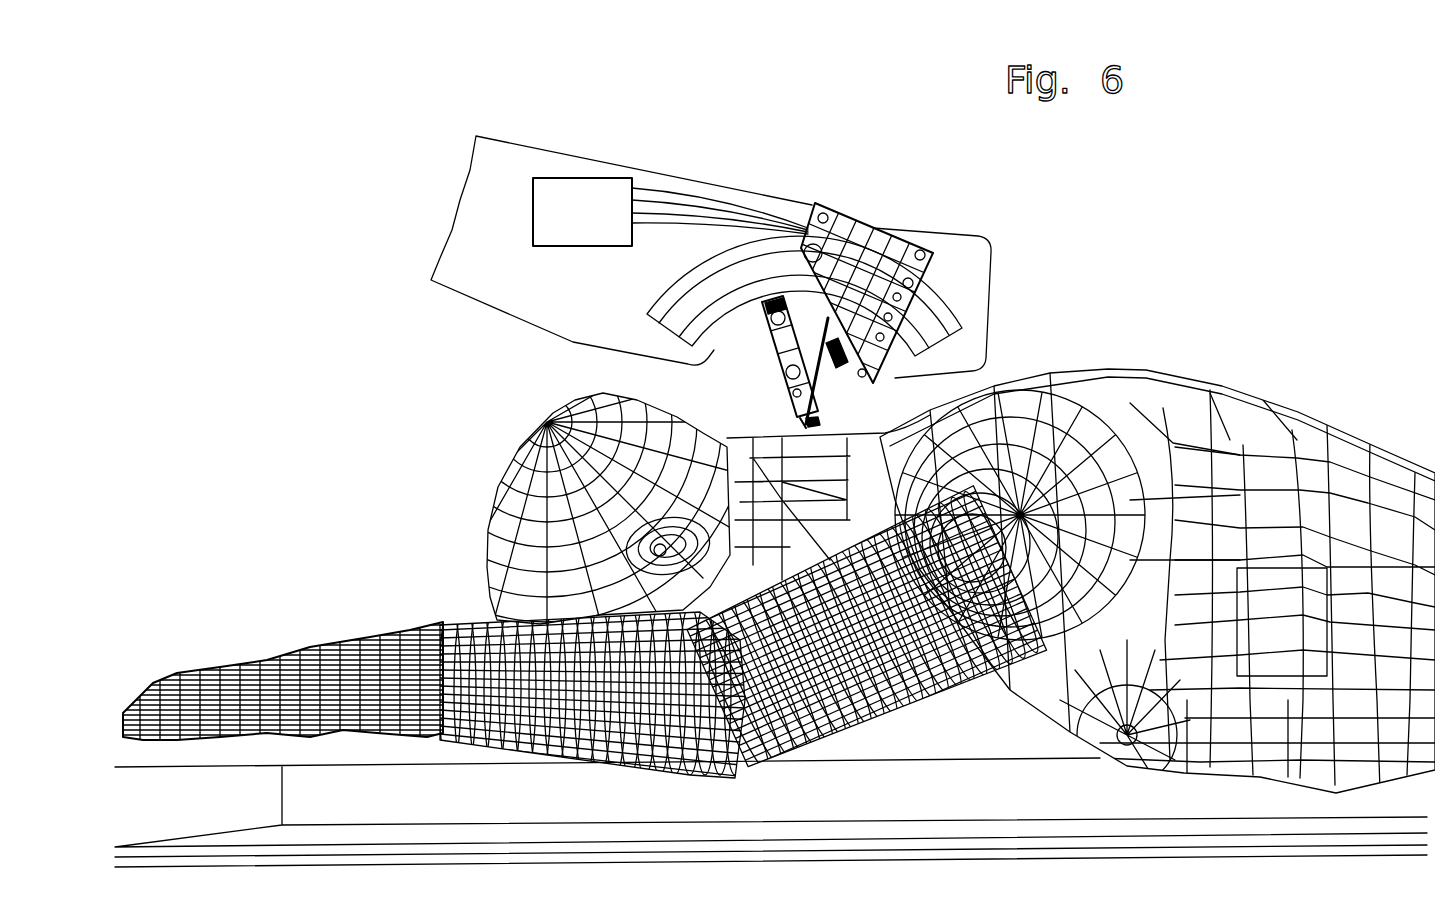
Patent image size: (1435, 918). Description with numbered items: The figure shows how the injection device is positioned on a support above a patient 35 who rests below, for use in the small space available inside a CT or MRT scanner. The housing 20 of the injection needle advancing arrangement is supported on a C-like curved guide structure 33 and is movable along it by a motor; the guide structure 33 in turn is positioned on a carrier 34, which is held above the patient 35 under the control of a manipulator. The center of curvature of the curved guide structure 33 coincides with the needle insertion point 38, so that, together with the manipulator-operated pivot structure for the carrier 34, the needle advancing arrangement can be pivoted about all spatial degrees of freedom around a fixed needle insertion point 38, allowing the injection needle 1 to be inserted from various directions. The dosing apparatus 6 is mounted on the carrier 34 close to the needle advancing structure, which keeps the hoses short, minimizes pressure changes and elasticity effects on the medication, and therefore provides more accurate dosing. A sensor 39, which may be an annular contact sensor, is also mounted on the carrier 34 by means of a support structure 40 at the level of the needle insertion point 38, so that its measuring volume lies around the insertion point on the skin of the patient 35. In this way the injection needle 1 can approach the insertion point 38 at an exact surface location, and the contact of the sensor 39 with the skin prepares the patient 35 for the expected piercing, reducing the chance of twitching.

The injection needle 1 is at (817, 397).
The dosing apparatus 6 is at (589, 205).
The housing 20 is at (860, 227).
The guide structure 33 is at (940, 320).
The carrier 34 is at (490, 163).
The patient 35 is at (1203, 431).
The needle insertion point 38 is at (803, 422).
The sensor 39 is at (813, 421).
The support structure 40 is at (780, 357).